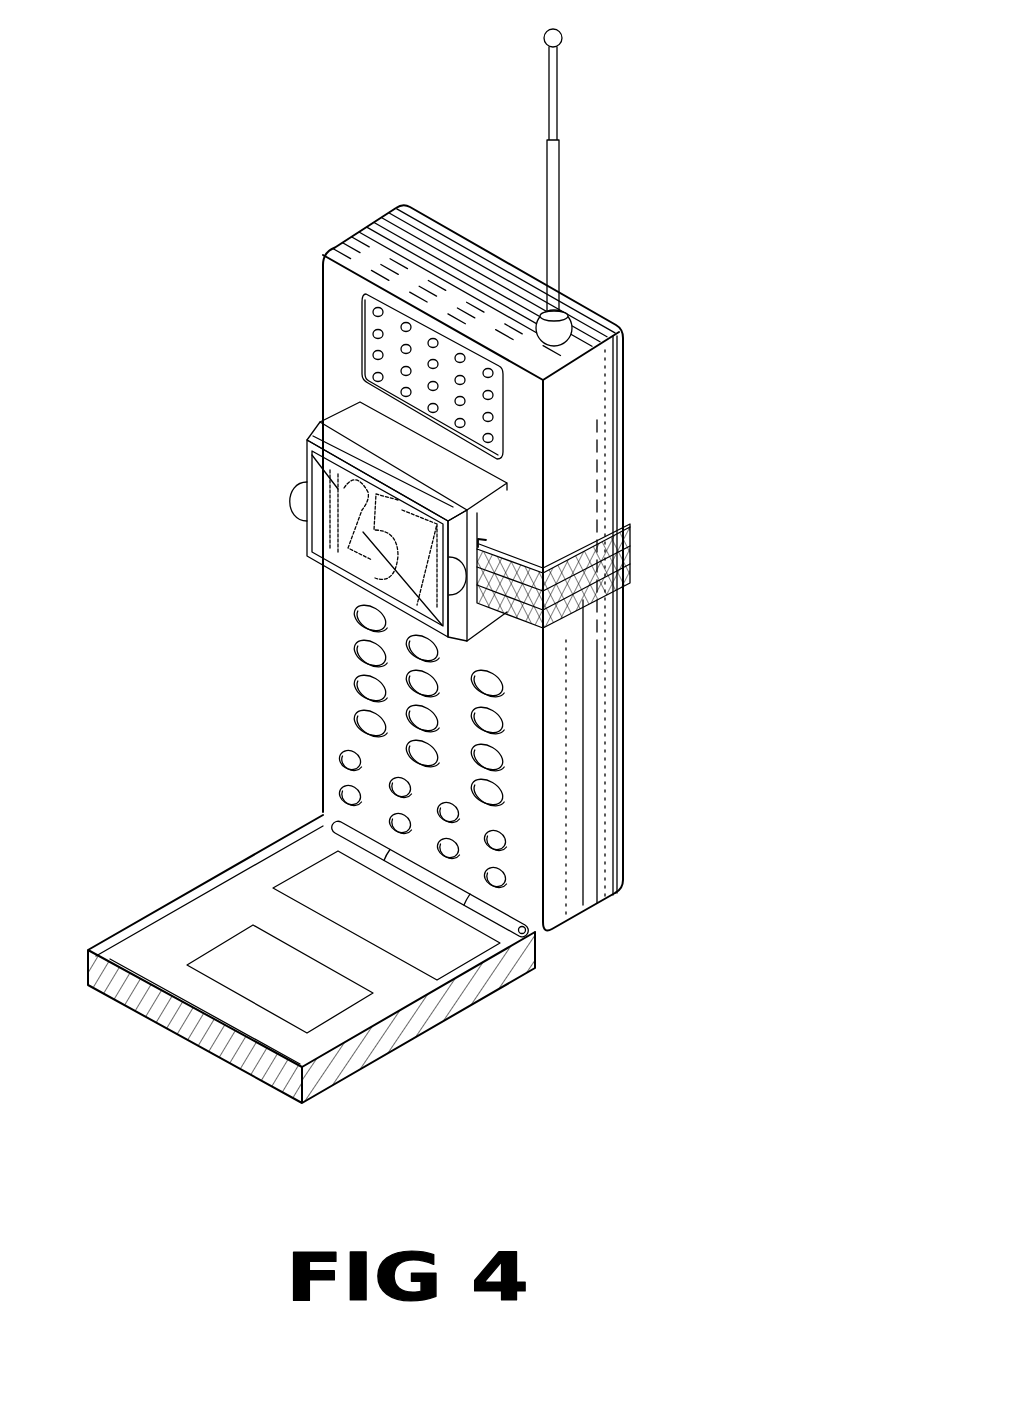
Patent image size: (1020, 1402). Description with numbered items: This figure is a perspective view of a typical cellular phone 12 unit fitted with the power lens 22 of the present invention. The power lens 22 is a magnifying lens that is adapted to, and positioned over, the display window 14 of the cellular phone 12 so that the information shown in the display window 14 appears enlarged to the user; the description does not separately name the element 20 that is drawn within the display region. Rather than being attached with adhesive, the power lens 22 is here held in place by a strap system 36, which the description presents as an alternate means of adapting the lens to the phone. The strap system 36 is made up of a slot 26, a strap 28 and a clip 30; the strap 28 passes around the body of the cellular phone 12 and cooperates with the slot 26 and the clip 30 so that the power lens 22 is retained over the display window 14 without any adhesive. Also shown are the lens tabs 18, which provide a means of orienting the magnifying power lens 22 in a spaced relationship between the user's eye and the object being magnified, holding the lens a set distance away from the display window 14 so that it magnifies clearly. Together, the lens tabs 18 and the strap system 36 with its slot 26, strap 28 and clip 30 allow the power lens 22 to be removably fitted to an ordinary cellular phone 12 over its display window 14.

The cellular phone 12 is at (624, 750).
The display window 14 is at (360, 404).
The lens tabs 18 is at (293, 495).
The display 20 is at (423, 495).
The power lens 22 is at (320, 532).
The slot 26 is at (478, 602).
The strap 28 is at (600, 592).
The clip 30 is at (483, 552).
The strap system 36 is at (490, 547).